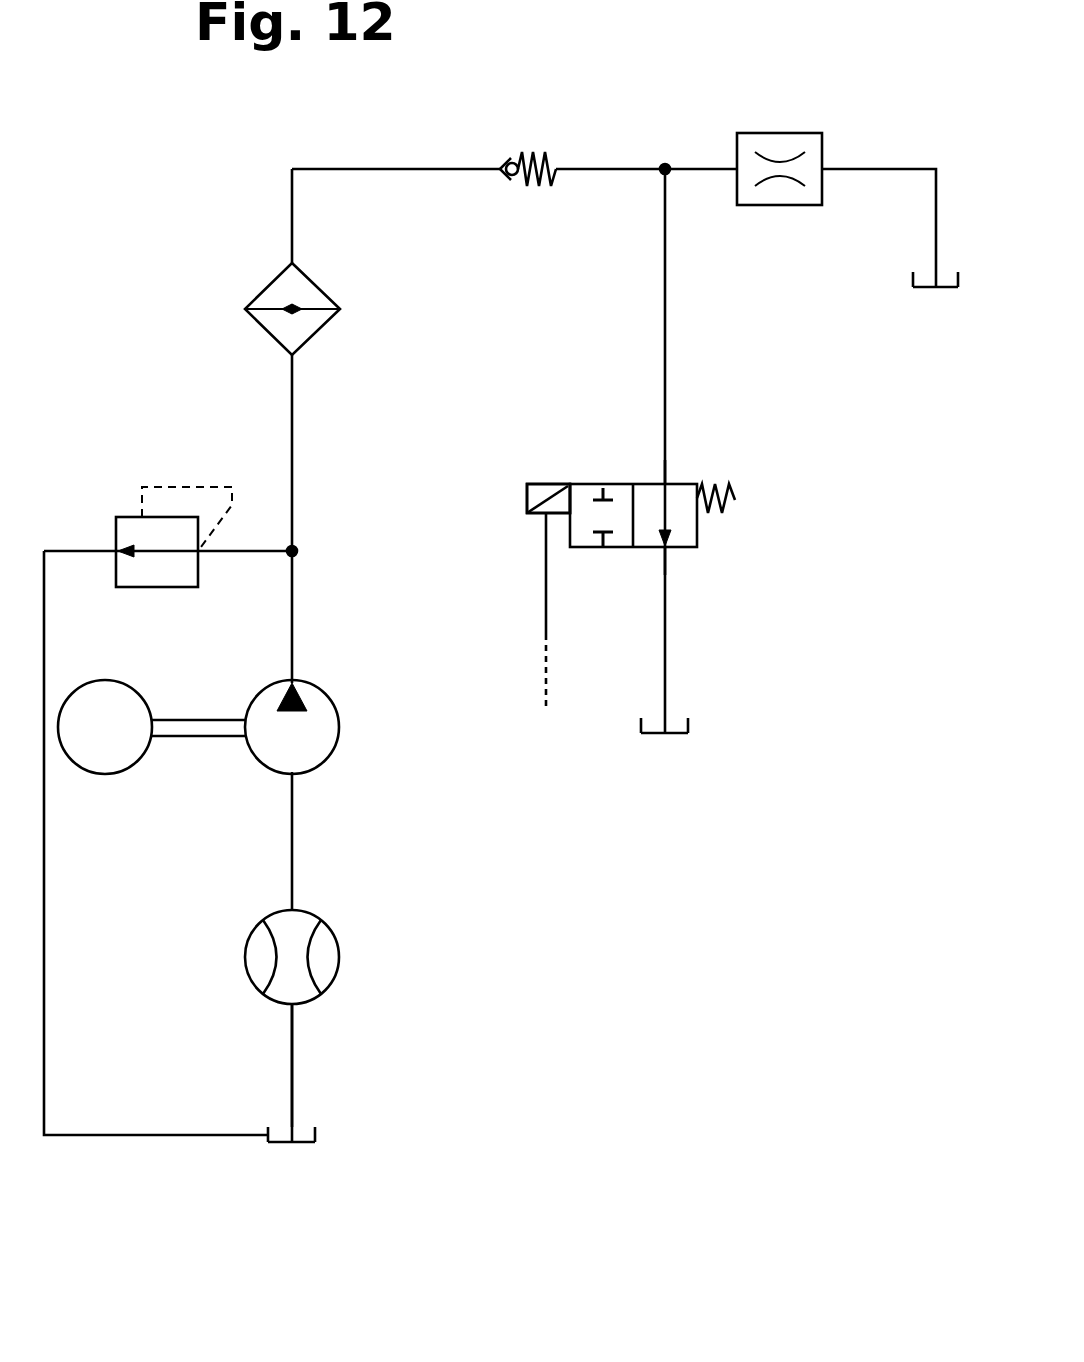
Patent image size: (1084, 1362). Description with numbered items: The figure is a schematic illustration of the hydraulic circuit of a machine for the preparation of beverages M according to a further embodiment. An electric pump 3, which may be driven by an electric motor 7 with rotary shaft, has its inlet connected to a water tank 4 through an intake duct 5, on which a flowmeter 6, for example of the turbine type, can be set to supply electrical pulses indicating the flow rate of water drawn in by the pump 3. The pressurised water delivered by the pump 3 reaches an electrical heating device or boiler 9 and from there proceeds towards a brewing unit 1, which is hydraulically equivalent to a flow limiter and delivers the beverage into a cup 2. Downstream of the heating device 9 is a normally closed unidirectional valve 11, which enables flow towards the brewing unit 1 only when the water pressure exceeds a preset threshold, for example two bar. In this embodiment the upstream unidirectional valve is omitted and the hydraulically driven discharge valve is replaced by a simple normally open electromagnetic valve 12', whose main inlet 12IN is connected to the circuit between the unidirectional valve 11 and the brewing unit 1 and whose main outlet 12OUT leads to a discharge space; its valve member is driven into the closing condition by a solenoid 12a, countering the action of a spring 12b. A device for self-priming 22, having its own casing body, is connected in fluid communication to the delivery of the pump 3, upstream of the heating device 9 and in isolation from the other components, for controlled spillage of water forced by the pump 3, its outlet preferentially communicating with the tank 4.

The machine for the preparation of beverages M is at (190, 202).
The unidirectional valve 11 is at (528, 152).
The brewing unit 1 is at (775, 133).
The cup 2 is at (923, 290).
The heating device 9 is at (270, 320).
The device for self-priming 22 is at (88, 515).
The normally open electromagnetic valve 12' is at (612, 503).
The solenoid 12a is at (527, 512).
The spring 12b is at (740, 493).
The main inlet 12IN is at (665, 484).
The main outlet 12OUT is at (665, 548).
The electric motor 7 is at (117, 752).
The electric pump 3 is at (305, 750).
The flowmeter 6 is at (322, 958).
The intake duct 5 is at (292, 1062).
The water tank 4 is at (300, 1144).